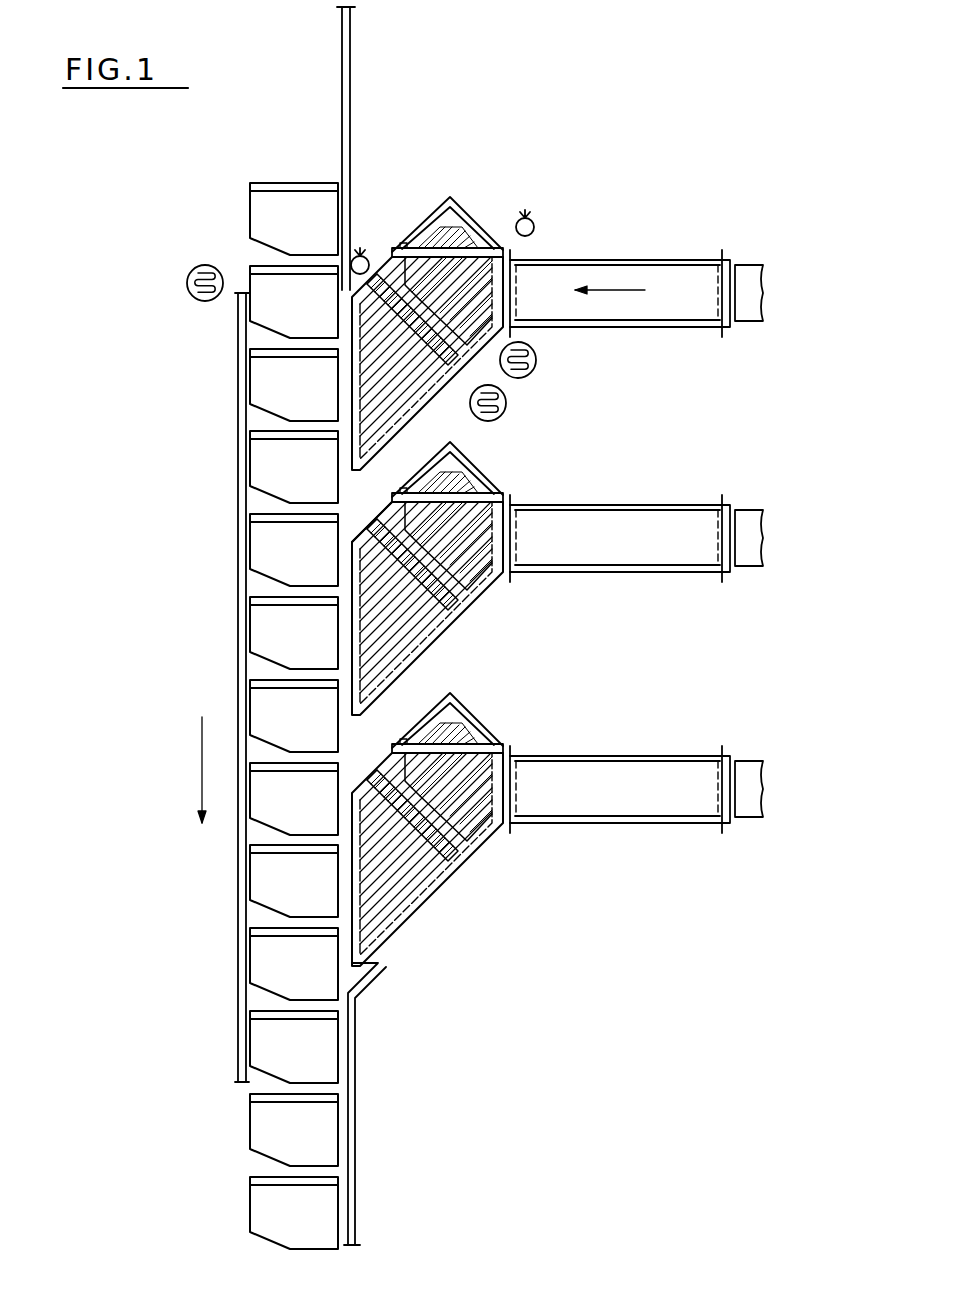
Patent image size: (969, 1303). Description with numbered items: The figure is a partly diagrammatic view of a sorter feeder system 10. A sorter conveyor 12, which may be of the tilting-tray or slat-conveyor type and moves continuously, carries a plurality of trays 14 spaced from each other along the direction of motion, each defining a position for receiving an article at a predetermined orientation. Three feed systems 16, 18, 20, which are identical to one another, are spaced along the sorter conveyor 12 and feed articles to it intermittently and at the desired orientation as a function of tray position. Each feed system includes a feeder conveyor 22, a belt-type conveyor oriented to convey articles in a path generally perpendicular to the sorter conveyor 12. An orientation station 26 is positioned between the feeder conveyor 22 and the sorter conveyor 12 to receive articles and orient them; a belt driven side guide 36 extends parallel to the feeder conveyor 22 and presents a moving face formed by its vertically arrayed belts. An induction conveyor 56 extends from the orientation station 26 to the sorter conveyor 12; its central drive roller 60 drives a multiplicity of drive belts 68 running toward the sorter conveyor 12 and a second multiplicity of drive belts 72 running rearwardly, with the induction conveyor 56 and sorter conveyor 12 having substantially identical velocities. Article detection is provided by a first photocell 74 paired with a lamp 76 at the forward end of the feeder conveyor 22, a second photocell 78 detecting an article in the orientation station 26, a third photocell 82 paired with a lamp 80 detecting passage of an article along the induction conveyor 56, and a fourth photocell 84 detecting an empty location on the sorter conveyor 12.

The sorter feeder system 10 is at (483, 165).
The sorter conveyor 12 is at (225, 892).
The trays 14 is at (265, 710).
The feed system 16 is at (527, 292).
The feed system 18 is at (497, 560).
The feed system 20 is at (492, 722).
The feeder conveyor 22 is at (672, 307).
The orientation station 26 is at (417, 470).
The belt driven side guide 36 is at (475, 492).
The induction conveyor 56 is at (367, 515).
The central drive roller 60 is at (452, 592).
The drive belts 68 is at (408, 650).
The drive belts 72 is at (455, 592).
The first photocell 74 is at (537, 360).
The lamp 76 is at (537, 219).
The second photocell 78 is at (430, 283).
The lamp 80 is at (368, 254).
The third photocell 82 is at (507, 407).
The fourth photocell 84 is at (196, 302).